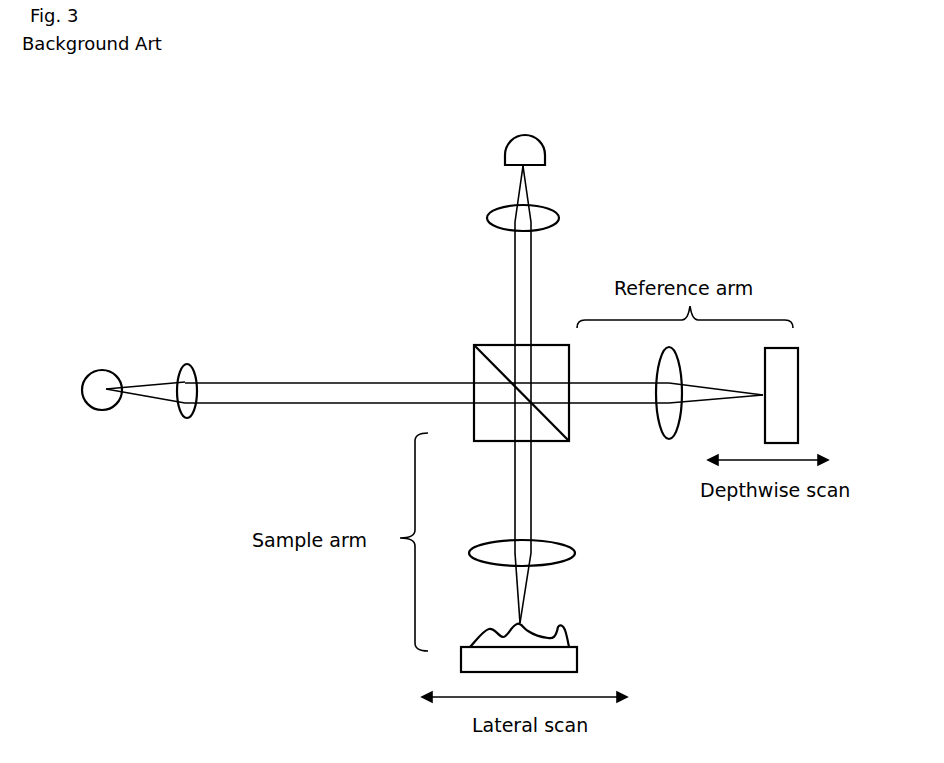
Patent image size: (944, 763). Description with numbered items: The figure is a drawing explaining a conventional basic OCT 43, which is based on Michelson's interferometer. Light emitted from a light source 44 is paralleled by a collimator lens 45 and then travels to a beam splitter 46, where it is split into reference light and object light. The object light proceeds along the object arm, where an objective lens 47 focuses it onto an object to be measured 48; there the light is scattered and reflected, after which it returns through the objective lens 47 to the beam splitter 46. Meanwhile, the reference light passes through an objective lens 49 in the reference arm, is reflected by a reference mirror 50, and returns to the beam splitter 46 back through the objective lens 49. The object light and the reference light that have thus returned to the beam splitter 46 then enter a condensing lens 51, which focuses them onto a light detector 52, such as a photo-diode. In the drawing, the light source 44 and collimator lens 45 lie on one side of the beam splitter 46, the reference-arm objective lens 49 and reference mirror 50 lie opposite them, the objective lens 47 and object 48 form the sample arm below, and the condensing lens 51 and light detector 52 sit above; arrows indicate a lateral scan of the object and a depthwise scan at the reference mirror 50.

The basic OCT 43 is at (268, 141).
The light source 44 is at (112, 370).
The collimator lens 45 is at (193, 368).
The beam splitter 46 is at (500, 343).
The objective lens 47 is at (548, 541).
The object to be measured 48 is at (562, 634).
The objective lens 49 is at (660, 430).
The reference mirror 50 is at (801, 376).
The condensing lens 51 is at (555, 210).
The light detector 52 is at (538, 141).